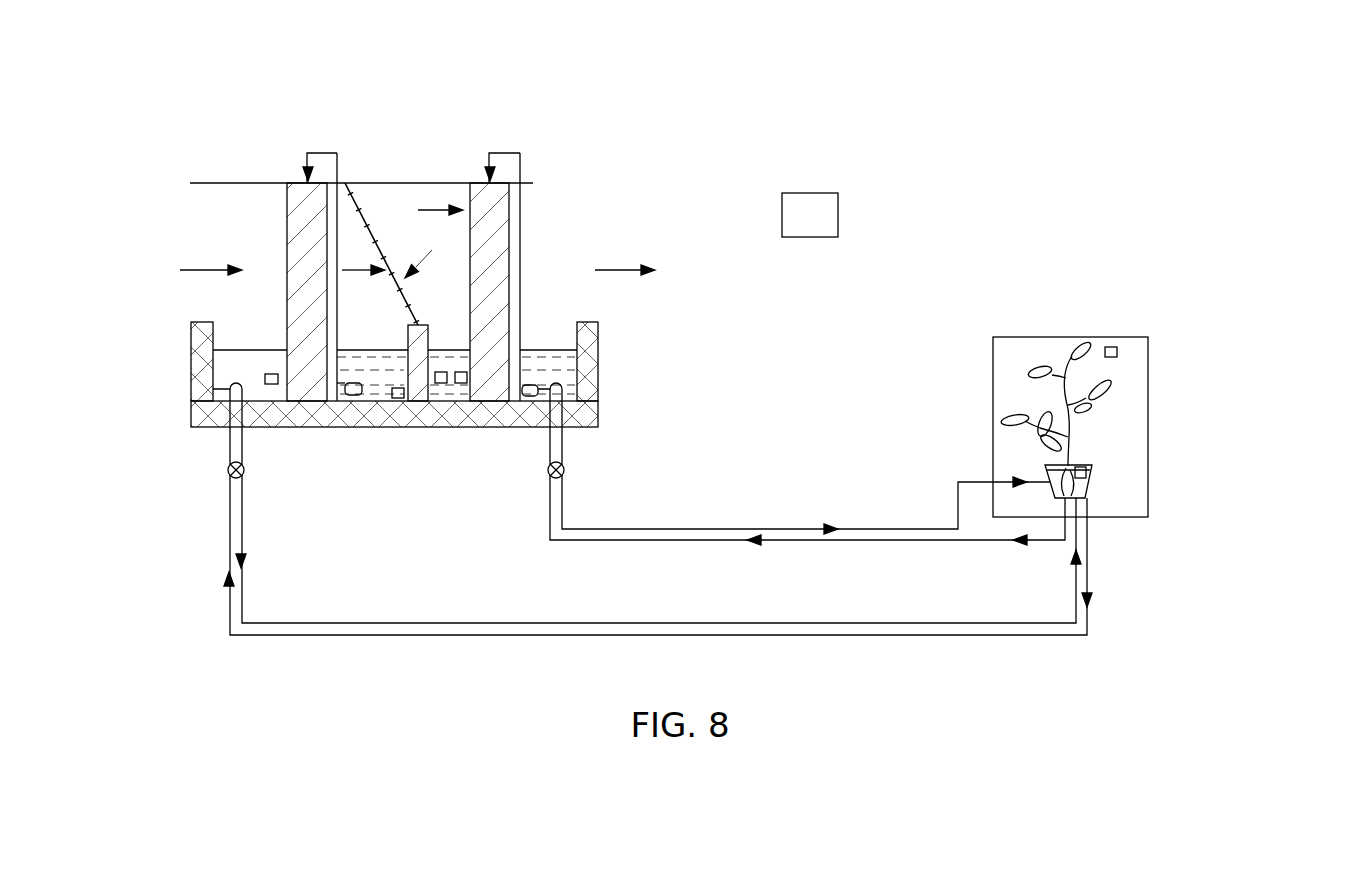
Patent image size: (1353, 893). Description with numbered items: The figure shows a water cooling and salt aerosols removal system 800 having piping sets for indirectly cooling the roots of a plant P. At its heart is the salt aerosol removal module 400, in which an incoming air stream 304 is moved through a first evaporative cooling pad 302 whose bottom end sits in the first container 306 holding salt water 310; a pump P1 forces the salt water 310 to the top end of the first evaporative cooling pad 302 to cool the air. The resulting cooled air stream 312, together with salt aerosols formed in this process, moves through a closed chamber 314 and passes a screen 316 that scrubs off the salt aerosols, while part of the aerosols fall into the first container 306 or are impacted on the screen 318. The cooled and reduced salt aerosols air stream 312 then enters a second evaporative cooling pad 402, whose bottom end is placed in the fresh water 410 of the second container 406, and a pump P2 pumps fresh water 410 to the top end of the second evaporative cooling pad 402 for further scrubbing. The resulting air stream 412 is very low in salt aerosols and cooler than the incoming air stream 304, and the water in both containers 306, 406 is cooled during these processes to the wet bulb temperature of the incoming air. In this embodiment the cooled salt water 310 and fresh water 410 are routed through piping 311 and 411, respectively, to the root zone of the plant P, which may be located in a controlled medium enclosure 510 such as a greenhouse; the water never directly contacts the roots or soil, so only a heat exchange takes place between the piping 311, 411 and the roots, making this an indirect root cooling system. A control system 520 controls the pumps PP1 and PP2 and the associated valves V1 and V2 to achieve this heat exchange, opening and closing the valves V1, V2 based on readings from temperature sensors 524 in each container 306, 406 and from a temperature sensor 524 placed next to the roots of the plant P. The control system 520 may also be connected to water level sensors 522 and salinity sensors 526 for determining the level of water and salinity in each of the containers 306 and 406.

The water cooling and salt aerosols removal system 800 is at (1250, 105).
The salt aerosol removal module 400 is at (341, 119).
The first evaporative cooling pad 302 is at (297, 212).
The second evaporative cooling pad 402 is at (478, 183).
The incoming air stream 304 is at (199, 268).
The cooled air stream 312 is at (360, 270).
The screen 318 is at (378, 236).
The screen 316 is at (432, 250).
The resulting air stream 412 is at (620, 268).
The closed chamber 314 is at (352, 327).
The salt water 310 is at (373, 388).
The fresh water 410 is at (443, 401).
The first container 306 is at (191, 356).
The second container 406 is at (598, 345).
The water level sensor 522 is at (271, 384).
The salinity sensor 526 is at (440, 372).
The pump P1 is at (347, 396).
The pump P2 is at (533, 385).
The pump PP1 is at (213, 393).
The pump PP2 is at (562, 389).
The valve V1 is at (228, 470).
The valve V2 is at (564, 470).
The piping 311 is at (481, 608).
The piping 411 is at (890, 513).
The control system 520 is at (840, 215).
The controlled medium enclosure 510 is at (1043, 337).
The temperature sensor 524 is at (1111, 347).
The plant P is at (1072, 432).